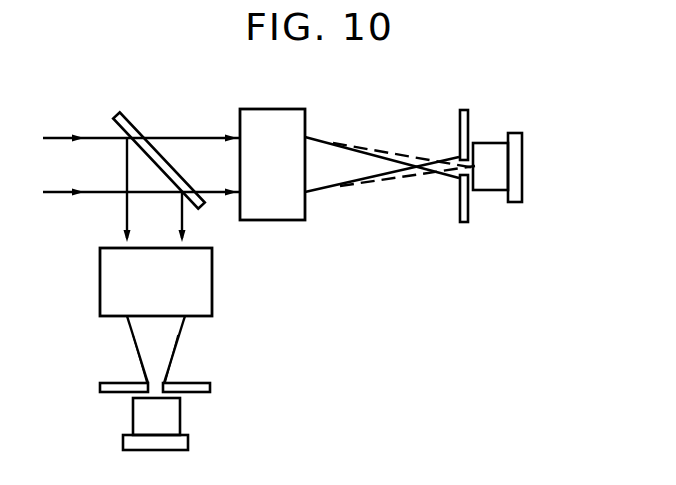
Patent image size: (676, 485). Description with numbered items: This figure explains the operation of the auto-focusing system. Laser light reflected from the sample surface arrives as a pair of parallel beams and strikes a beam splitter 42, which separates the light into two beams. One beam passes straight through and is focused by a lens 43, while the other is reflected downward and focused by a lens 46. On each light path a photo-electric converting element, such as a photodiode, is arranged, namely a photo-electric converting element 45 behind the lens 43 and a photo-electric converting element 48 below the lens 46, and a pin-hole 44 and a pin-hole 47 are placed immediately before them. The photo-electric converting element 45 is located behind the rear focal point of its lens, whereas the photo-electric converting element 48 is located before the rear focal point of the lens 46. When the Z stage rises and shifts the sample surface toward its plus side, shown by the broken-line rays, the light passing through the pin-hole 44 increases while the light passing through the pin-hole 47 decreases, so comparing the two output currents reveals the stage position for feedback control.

The beam splitter 42 is at (130, 118).
The lens 43 is at (277, 220).
The pin-hole 44 is at (463, 222).
The photo-electric converting element 45 is at (517, 203).
The lens 46 is at (100, 284).
The pin-hole 47 is at (100, 387).
The photo-electric converting element 48 is at (123, 441).